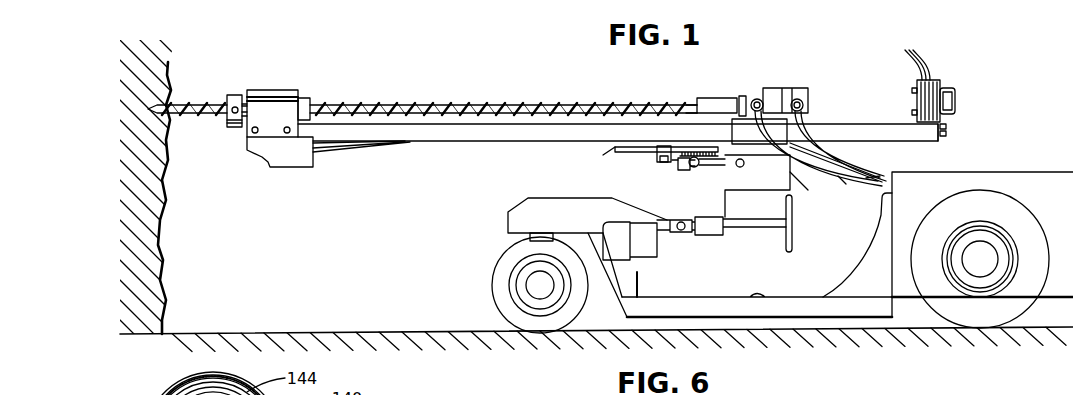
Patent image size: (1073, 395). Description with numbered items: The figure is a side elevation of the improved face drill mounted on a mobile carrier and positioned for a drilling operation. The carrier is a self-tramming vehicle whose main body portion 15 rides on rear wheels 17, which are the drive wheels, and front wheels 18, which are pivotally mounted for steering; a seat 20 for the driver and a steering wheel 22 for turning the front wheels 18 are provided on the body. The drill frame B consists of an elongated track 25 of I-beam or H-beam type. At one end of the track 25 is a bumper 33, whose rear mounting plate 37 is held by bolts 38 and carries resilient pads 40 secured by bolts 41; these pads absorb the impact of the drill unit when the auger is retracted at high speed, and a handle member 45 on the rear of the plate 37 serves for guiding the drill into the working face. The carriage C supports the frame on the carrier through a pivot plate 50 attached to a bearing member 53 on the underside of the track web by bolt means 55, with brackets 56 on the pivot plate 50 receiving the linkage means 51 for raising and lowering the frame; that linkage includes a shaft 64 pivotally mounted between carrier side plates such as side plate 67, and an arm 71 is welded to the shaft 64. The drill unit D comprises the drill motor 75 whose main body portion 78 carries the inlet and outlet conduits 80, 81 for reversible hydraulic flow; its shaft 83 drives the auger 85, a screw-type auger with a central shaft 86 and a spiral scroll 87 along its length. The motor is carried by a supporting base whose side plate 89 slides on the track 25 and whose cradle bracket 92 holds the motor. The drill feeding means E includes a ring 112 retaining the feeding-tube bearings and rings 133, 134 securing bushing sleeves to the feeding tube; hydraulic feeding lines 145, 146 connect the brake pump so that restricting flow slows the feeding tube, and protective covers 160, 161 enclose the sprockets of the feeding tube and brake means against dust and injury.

The main body portion 15 is at (988, 178).
The rear wheels 17 is at (978, 313).
The front wheels 18 is at (505, 273).
The seat 20 is at (853, 277).
The steering wheel 22 is at (785, 243).
The elongated track 25 is at (522, 137).
The bumper 33 is at (941, 76).
The rear mounting plate 37 is at (940, 141).
The bolts 38 is at (946, 134).
The resilient pads 40 is at (906, 59).
The bolts 41 is at (912, 113).
The handle member 45 is at (952, 95).
The pivot plate 50 is at (605, 154).
The linkage means 51 is at (668, 175).
The bearing member 53 is at (660, 146).
The bolt means 55 is at (658, 162).
The brackets 56 is at (688, 170).
The shaft 64 is at (740, 168).
The side plate 67 is at (792, 175).
The arm 71 is at (711, 168).
The drill motor 75 is at (787, 80).
The main body portion 78 is at (802, 94).
The inlet and outlet conduit 80 is at (842, 182).
The inlet and outlet conduit 81 is at (873, 180).
The shaft 83 is at (742, 95).
The auger 85 is at (474, 95).
The central shaft 86 is at (560, 102).
The spiral scroll 87 is at (410, 102).
The side plate 89 is at (758, 140).
The cradle bracket 92 is at (754, 96).
The ring 112 is at (233, 95).
The ring 133 is at (245, 96).
The ring 134 is at (304, 102).
The feeding line 145 is at (335, 150).
The feeding line 146 is at (368, 153).
The protective cover 160 is at (282, 90).
The protective cover 161 is at (262, 152).
The drill frame B is at (964, 100).
The carriage C is at (618, 161).
The drill unit D is at (641, 94).
The drill feeding means E is at (279, 76).